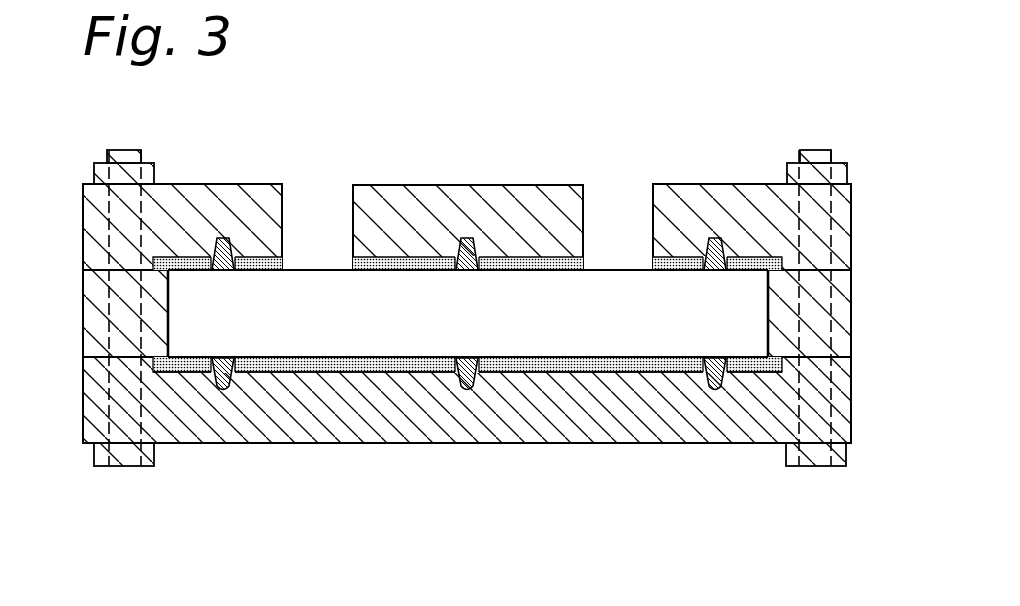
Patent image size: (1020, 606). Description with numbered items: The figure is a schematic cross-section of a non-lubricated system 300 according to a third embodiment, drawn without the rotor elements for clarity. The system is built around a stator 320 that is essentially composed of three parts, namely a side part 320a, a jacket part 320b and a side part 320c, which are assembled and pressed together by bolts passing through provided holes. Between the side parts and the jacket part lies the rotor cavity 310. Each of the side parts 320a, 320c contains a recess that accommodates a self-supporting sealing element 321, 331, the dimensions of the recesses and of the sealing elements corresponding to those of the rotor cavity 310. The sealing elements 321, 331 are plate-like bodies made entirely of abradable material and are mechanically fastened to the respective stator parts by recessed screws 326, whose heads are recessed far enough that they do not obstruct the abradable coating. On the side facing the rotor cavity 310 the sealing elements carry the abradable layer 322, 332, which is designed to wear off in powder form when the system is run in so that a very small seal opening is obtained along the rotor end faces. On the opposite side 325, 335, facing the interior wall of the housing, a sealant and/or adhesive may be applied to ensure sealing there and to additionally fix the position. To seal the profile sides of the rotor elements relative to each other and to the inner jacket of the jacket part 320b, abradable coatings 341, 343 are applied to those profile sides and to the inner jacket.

The non-lubricated system 300 is at (677, 93).
The rotor cavity 310 is at (495, 326).
The stator 320 is at (468, 161).
The side part 320a is at (231, 234).
The jacket part 320b is at (98, 333).
The side part 320c is at (509, 421).
The self-supporting sealing element 321 is at (362, 257).
The abradable layer 322 is at (400, 273).
The opposite side 325 is at (437, 256).
The recessed screws 326 is at (232, 246).
The self-supporting sealing element 331 is at (615, 373).
The abradable layer 332 is at (338, 356).
The opposite side 335 is at (377, 373).
The abradable coating 341 is at (168, 290).
The abradable coating 343 is at (768, 305).